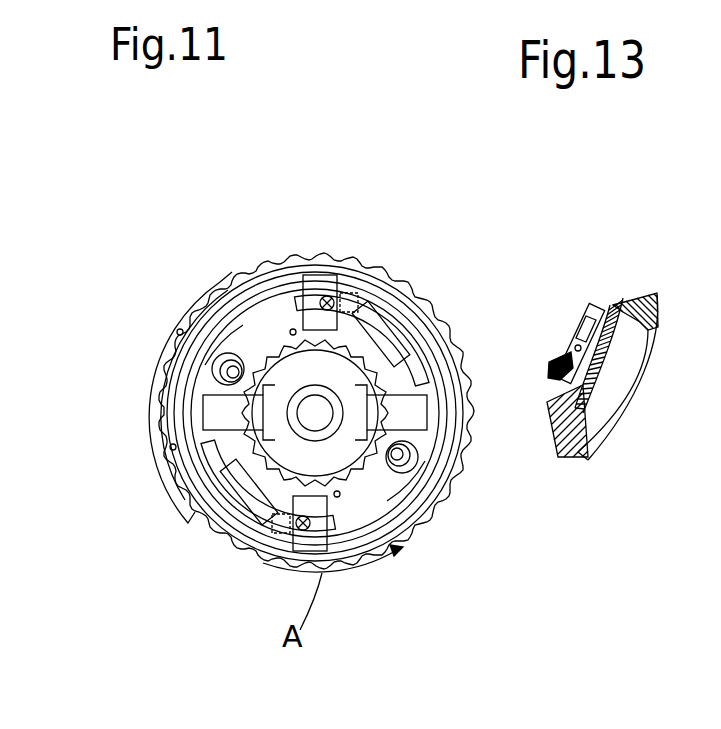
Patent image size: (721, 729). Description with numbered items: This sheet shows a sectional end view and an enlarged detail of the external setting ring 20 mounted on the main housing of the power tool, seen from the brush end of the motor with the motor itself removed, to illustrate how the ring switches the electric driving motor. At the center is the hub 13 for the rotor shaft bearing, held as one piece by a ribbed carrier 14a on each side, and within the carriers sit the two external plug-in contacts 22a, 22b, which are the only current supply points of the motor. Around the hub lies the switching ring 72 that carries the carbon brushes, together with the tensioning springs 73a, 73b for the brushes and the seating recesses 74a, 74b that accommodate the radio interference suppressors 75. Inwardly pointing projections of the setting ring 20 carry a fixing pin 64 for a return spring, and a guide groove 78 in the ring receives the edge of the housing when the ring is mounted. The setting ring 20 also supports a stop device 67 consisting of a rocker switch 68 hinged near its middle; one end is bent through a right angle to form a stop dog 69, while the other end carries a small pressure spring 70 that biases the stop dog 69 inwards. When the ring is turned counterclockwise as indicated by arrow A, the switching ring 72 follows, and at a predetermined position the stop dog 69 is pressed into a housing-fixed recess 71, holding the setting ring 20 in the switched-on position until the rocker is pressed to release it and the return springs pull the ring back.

In FIG. 11, the hub 13 is at (343, 380).
In FIG. 11, the ribbed carrier 14a is at (278, 330).
In FIG. 11, the setting ring 20 is at (397, 283).
In FIG. 11, the external plug-in contact 22a is at (358, 307).
In FIG. 11, the external plug-in contact 22b is at (343, 470).
In FIG. 11, the fixing pin 64 is at (327, 296).
In FIG. 13, the stop device 67 is at (599, 290).
In FIG. 13, the rocker switch 68 is at (582, 325).
In FIG. 13, the stop dog 69 is at (628, 297).
In FIG. 13, the pressure spring 70 is at (558, 412).
In FIG. 13, the recess 71 is at (585, 405).
In FIG. 11, the switching ring 72 is at (242, 327).
In FIG. 11, the tensioning spring 73a is at (213, 352).
In FIG. 11, the tensioning spring 73b is at (418, 466).
In FIG. 11, the seating recess 74a is at (213, 530).
In FIG. 11, the seating recess 74b is at (397, 303).
In FIG. 11, the radio interference suppressor 75 is at (410, 338).
In FIG. 11, the guide groove 78 is at (170, 458).